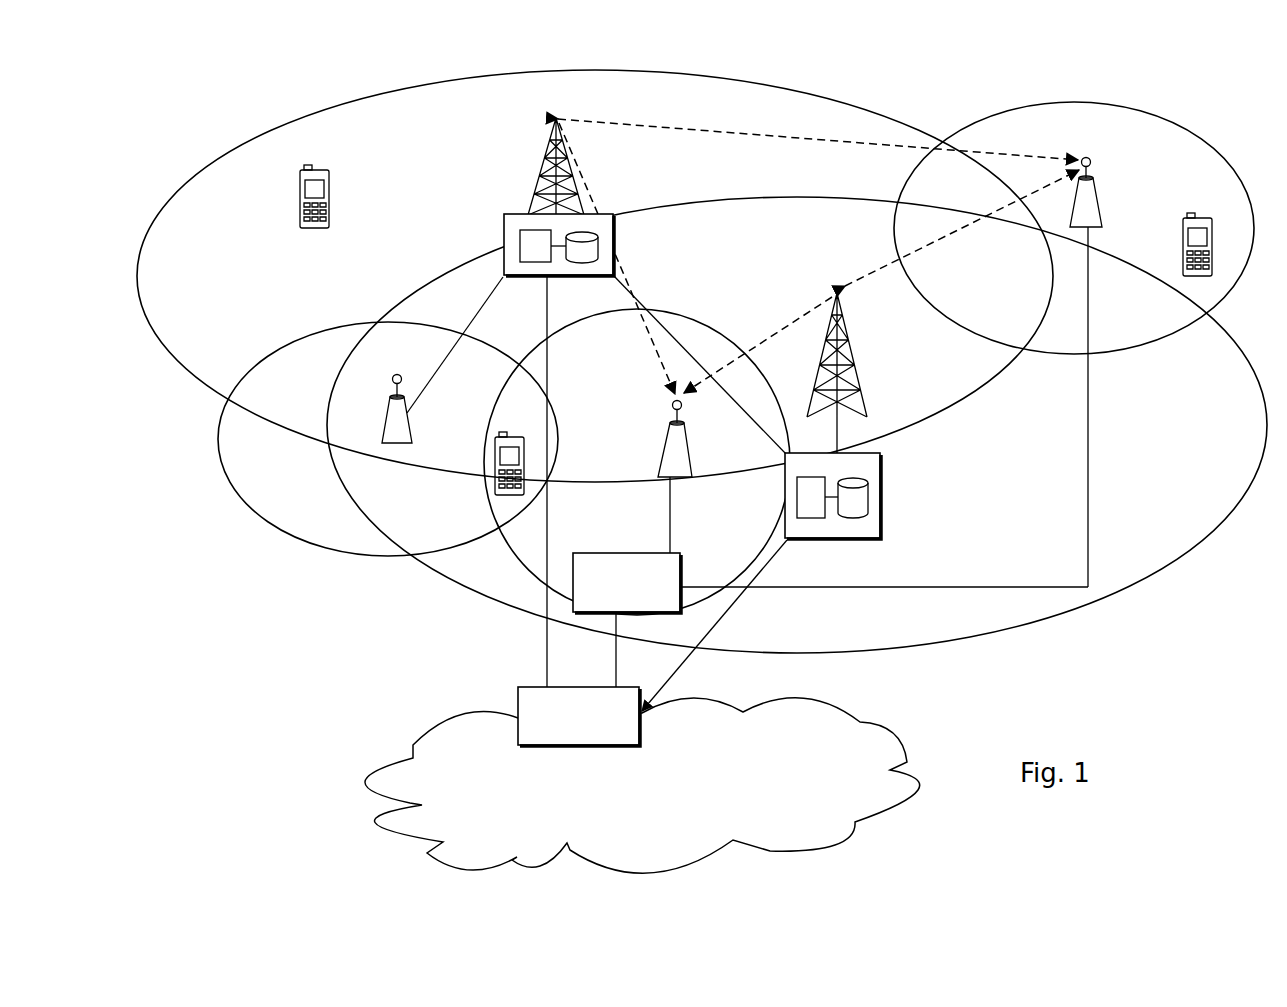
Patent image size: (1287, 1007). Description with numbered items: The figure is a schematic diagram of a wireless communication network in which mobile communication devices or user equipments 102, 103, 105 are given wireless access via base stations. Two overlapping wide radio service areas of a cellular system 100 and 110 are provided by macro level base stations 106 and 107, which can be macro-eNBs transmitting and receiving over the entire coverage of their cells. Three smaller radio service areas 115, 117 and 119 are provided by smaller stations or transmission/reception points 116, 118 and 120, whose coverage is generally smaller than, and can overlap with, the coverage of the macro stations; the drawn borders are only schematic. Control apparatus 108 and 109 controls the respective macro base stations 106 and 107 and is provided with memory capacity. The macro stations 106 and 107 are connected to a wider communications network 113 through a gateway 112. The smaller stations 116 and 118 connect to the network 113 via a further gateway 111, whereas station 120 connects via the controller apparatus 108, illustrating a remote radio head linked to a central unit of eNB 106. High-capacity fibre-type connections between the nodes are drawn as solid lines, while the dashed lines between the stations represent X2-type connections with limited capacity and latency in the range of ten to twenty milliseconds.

The radio service area of cellular system 100 is at (228, 151).
The user equipment 102 is at (300, 212).
The user equipment 103 is at (492, 490).
The user equipment 105 is at (1212, 272).
The macro level base station 106 is at (541, 182).
The macro level base station 107 is at (860, 382).
The control apparatus 108 is at (504, 232).
The control apparatus 109 is at (880, 522).
The radio service area of cellular system 110 is at (1154, 580).
The gateway 111 is at (573, 590).
The gateway 112 is at (520, 687).
The wider communications network 113 is at (447, 757).
The smaller radio service area 115 is at (1202, 128).
The smaller station 116 is at (1083, 156).
The smaller radio service area 117 is at (709, 326).
The smaller station 118 is at (678, 458).
The smaller radio service area 119 is at (299, 530).
The smaller station 120 is at (382, 413).